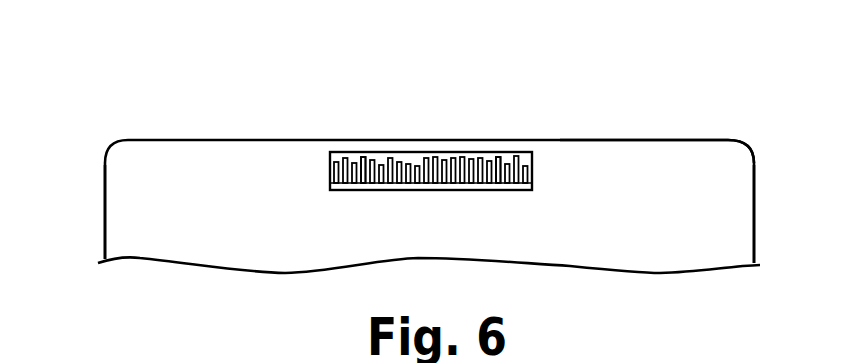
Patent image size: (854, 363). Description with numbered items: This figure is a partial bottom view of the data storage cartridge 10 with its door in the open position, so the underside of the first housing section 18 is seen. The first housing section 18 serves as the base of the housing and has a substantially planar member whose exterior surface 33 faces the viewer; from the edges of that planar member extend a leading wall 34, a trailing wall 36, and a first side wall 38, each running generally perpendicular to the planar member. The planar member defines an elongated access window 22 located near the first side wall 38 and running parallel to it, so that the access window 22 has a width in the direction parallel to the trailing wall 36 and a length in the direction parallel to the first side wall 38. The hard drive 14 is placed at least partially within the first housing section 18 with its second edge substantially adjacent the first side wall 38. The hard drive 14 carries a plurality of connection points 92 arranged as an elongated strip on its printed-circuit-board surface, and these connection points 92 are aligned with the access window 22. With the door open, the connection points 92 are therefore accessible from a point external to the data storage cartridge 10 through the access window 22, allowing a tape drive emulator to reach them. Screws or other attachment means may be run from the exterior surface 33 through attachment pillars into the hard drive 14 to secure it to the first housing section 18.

The data storage cartridge 10 is at (705, 60).
The hard drive 14 is at (474, 158).
The first housing section 18 is at (216, 175).
The access window 22 is at (336, 151).
The exterior surface 33 is at (732, 163).
The leading wall 34 is at (756, 228).
The trailing wall 36 is at (105, 210).
The first side wall 38 is at (647, 140).
The connection point 92 is at (364, 157).